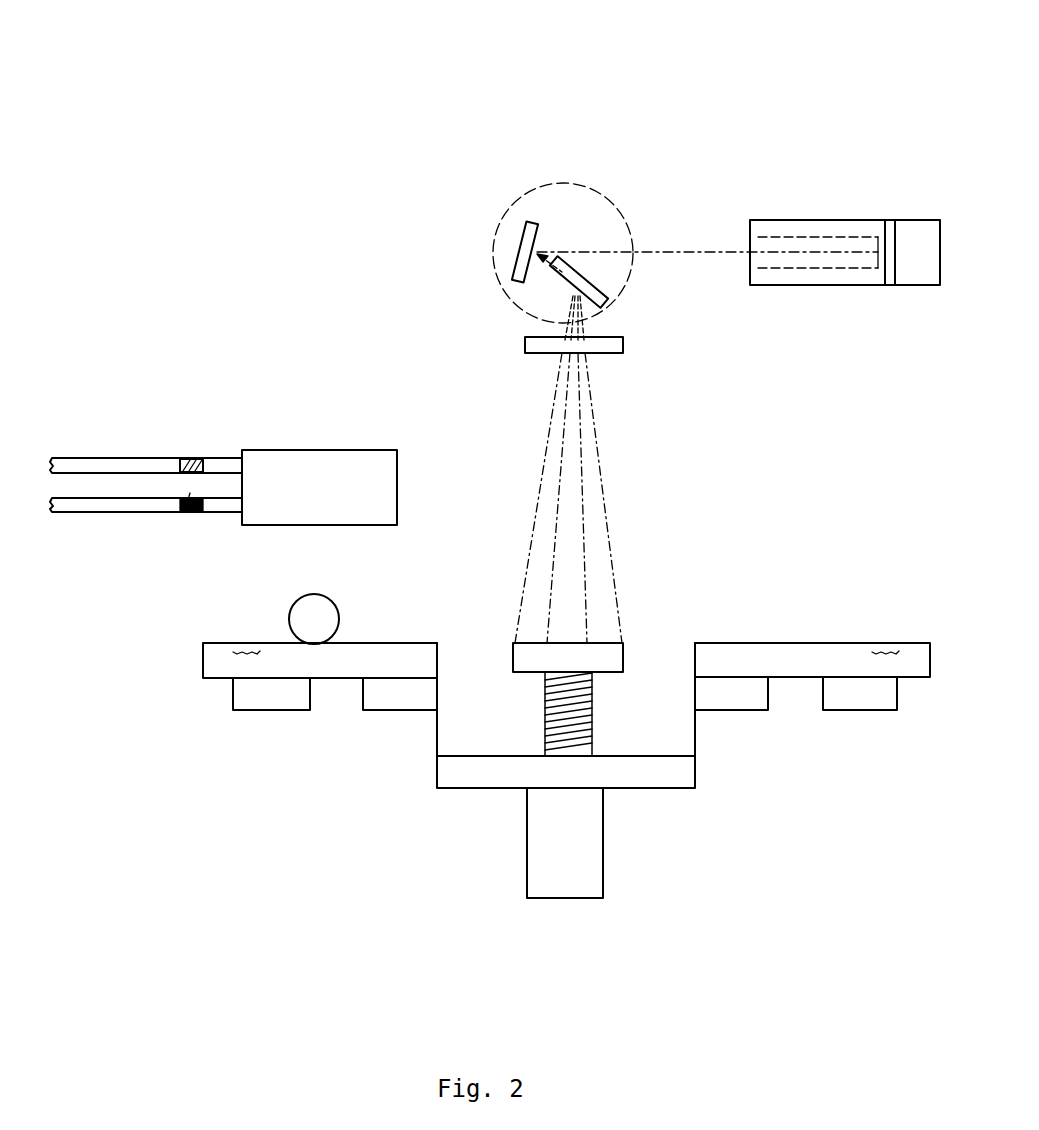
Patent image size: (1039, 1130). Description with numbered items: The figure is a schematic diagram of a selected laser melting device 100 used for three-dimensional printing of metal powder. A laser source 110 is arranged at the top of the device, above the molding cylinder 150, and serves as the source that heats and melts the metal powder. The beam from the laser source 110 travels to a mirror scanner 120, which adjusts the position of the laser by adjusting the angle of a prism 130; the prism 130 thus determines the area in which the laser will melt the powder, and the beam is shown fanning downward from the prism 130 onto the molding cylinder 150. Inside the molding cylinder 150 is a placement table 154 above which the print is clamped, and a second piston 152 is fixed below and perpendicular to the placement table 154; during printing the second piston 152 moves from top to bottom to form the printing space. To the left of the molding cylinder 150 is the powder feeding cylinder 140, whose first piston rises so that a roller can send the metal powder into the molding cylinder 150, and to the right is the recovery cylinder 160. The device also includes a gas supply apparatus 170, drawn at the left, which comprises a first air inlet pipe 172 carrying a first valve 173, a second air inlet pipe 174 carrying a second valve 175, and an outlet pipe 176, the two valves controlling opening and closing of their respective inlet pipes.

The selected laser melting device 100 is at (446, 92).
The laser source 110 is at (790, 218).
The mirror scanner 120 is at (494, 247).
The prism 130 is at (624, 345).
The powder feeding cylinder 140 is at (268, 769).
The molding cylinder 150 is at (567, 799).
The second piston 152 is at (583, 877).
The placement table 154 is at (437, 773).
The recovery cylinder 160 is at (876, 771).
The gas supply apparatus 170 is at (161, 332).
The first air inlet pipe 172 is at (93, 458).
The first valve 173 is at (193, 457).
The second air inlet pipe 174 is at (93, 512).
The second valve 175 is at (188, 517).
The outlet pipe 176 is at (283, 467).